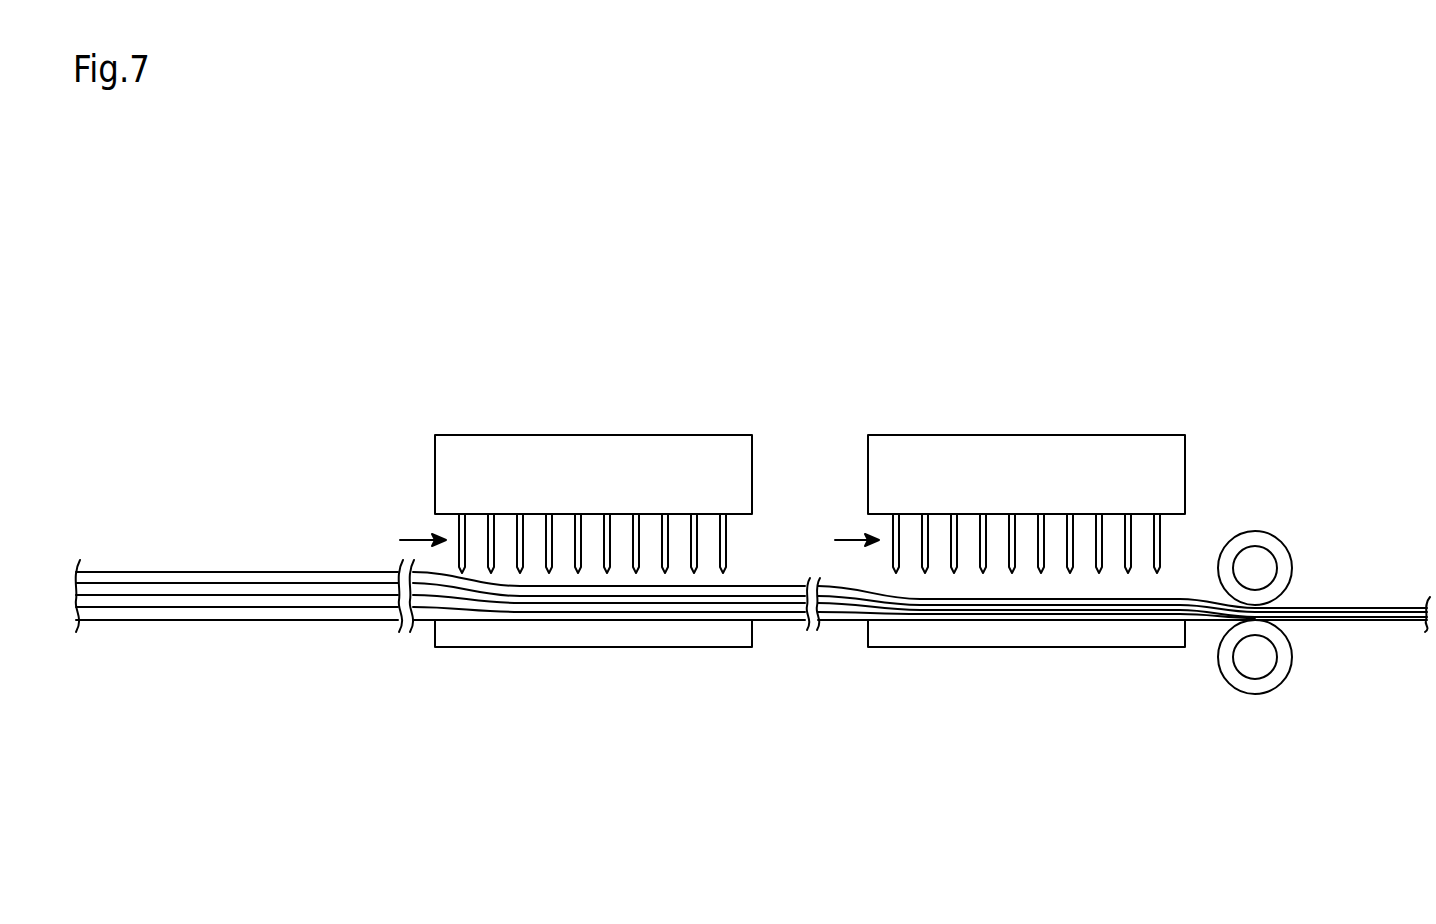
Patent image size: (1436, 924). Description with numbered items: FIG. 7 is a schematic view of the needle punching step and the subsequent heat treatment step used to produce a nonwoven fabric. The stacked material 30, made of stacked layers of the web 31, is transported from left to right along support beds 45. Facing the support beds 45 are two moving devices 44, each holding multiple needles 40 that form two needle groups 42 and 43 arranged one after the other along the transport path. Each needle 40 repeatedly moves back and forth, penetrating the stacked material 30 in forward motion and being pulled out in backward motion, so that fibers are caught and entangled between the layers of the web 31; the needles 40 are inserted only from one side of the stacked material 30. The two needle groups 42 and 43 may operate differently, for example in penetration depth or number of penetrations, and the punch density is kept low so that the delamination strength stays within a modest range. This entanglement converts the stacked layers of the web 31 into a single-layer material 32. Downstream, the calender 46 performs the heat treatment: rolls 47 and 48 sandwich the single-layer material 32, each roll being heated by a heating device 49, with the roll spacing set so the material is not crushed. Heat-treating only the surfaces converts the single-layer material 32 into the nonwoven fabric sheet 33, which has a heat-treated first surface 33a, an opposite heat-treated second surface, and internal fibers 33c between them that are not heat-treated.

The stacked material 30 is at (241, 572).
The web 31 is at (237, 595).
The single-layer material 32 is at (1203, 621).
The nonwoven fabric sheet 33 is at (1363, 623).
The first surface 33a is at (1406, 607).
The internal fibers 33c is at (1335, 607).
The needle 40 is at (728, 547).
The needle group 42 is at (405, 542).
The needle group 43 is at (838, 542).
The moving device 44 is at (594, 435).
The support bed 45 is at (594, 648).
The calender 46 is at (1298, 476).
The roll 47 is at (1246, 530).
The roll 48 is at (1256, 694).
The heating device 49 is at (1277, 558).